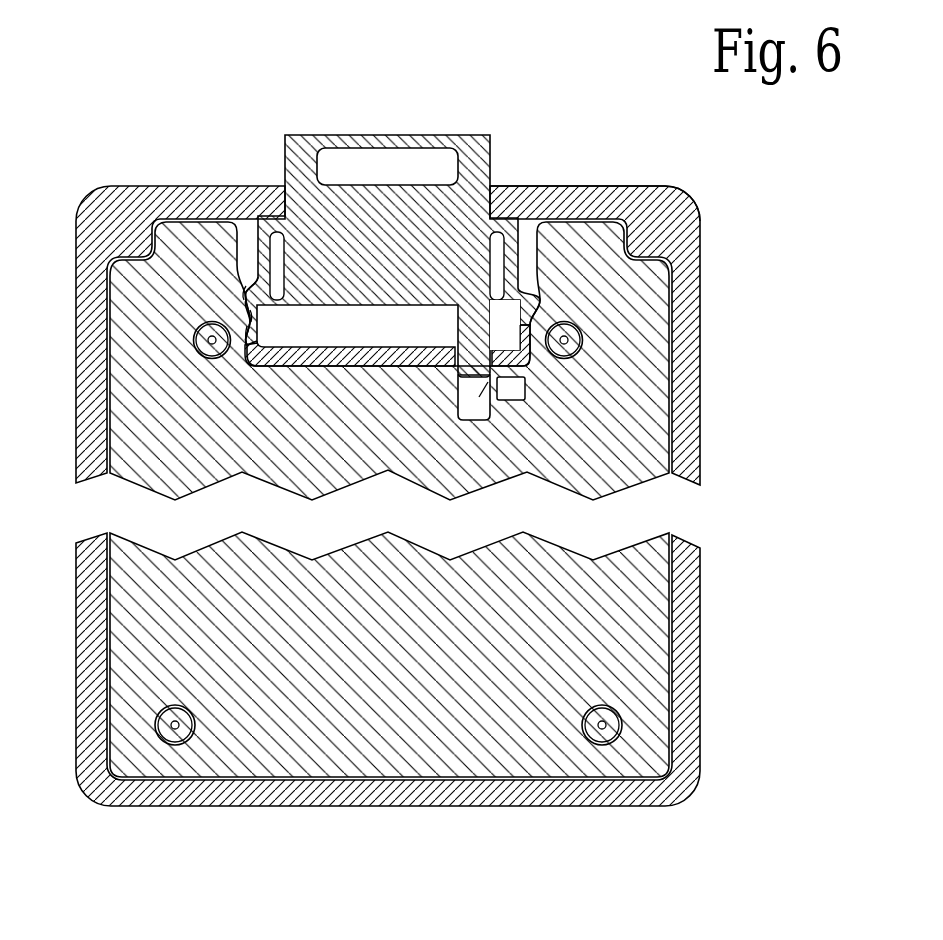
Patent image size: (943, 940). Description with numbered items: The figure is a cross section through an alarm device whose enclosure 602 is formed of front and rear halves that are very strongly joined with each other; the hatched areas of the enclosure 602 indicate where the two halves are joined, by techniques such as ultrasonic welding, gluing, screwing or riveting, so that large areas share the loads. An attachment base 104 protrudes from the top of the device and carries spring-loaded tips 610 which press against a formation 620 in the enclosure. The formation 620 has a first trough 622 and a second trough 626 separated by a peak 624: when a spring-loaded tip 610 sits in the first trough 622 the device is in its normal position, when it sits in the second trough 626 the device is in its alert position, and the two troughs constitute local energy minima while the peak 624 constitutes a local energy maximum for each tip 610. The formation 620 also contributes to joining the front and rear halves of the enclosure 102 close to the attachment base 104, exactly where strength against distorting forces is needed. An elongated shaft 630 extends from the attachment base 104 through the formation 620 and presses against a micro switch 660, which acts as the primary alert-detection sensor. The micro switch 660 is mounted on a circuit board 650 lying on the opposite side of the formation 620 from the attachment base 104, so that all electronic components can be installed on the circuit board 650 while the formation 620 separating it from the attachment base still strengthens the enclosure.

The enclosure 102 is at (568, 186).
The attachment base 104 is at (285, 135).
The enclosure 602 is at (668, 207).
The spring-loaded tip 610 is at (258, 306).
The formation 620 is at (258, 324).
The first trough 622 is at (239, 325).
The peak 624 is at (246, 310).
The second trough 626 is at (238, 286).
The elongated shaft 630 is at (505, 330).
The circuit board 650 is at (645, 434).
The micro switch 660 is at (543, 385).